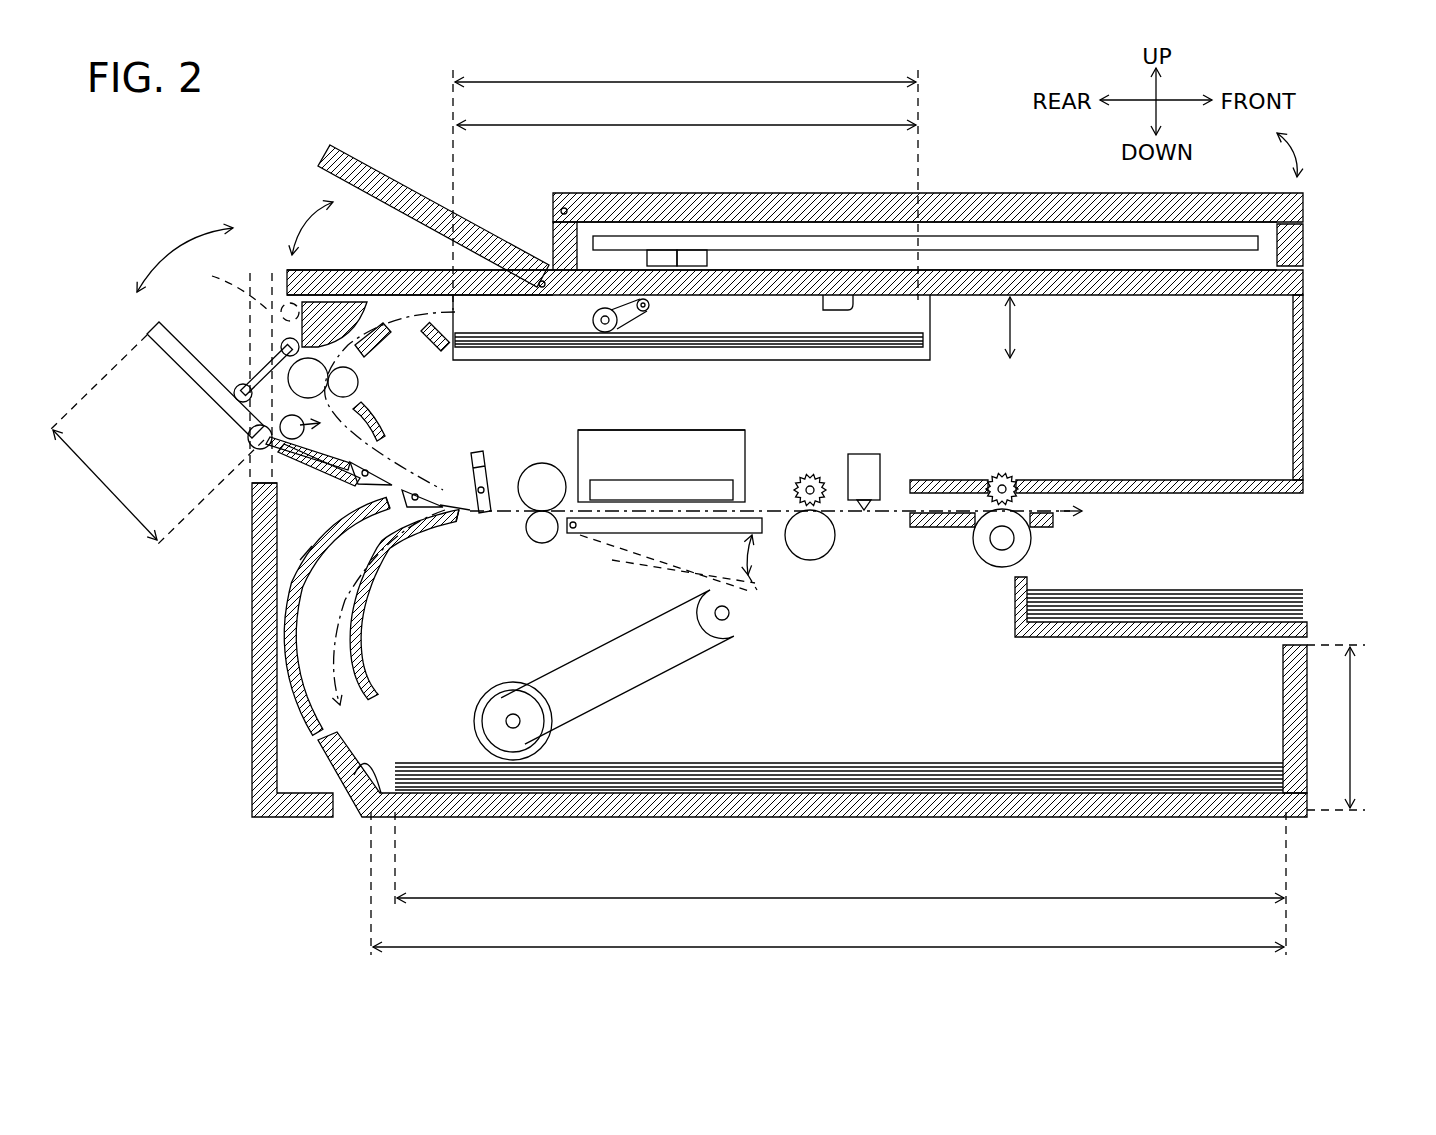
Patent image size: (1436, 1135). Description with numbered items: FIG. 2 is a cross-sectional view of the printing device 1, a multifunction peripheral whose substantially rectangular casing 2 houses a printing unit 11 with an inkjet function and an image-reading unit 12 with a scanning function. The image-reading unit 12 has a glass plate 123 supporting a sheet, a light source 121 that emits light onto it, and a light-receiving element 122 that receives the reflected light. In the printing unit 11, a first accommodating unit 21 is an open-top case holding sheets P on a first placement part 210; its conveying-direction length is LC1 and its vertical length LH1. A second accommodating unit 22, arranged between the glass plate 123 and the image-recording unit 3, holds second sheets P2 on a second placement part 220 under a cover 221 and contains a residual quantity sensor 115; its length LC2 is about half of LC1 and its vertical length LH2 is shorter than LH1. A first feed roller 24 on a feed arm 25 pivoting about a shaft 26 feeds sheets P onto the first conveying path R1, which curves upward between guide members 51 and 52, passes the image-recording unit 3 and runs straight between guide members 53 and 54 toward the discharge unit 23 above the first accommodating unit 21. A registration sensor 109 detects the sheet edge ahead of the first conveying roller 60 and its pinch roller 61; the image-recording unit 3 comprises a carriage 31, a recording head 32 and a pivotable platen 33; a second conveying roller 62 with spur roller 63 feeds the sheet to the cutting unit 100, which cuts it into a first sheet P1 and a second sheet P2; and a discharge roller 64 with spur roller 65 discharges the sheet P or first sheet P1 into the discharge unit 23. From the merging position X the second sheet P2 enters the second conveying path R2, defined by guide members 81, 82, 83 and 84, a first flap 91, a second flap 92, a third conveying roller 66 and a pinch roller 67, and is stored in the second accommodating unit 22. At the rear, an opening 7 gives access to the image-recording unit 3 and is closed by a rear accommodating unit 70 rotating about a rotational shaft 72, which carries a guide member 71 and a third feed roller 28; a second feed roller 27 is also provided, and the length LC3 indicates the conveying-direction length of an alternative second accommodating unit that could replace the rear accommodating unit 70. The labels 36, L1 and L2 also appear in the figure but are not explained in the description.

The printing device 1 is at (184, 196).
The casing 2 is at (244, 797).
The image-recording unit 3 is at (594, 428).
The opening 7 is at (282, 312).
The printing unit 11 is at (1120, 392).
The image-reading unit 12 is at (804, 192).
The first accommodating unit 21 is at (1000, 818).
The second accommodating unit 22 is at (932, 343).
The discharge unit 23 is at (1095, 640).
The first feed roller 24 is at (547, 760).
The feed arm 25 is at (648, 685).
The shaft 26 is at (735, 630).
The second feed roller 27 is at (598, 312).
The third feed roller 28 is at (262, 500).
The carriage 31 is at (692, 430).
The recording head 32 is at (648, 480).
The platen 33 is at (612, 545).
The guide 36 is at (449, 530).
The guide member 51 is at (292, 708).
The guide member 52 is at (365, 617).
The guide member 53 is at (957, 479).
The guide member 54 is at (933, 528).
The first conveying roller 60 is at (542, 463).
The pinch roller 61 is at (548, 543).
The second conveying roller 62 is at (810, 560).
The spur roller 63 is at (815, 476).
The discharge roller 64 is at (1003, 568).
The spur roller 65 is at (1010, 476).
The third conveying roller 66 is at (296, 395).
The pinch roller 67 is at (358, 386).
The rear accommodating unit 70 is at (178, 357).
The guide member 71 is at (278, 290).
The rotational shaft 72 is at (256, 442).
The guide member 81 is at (268, 447).
The guide member 82 is at (388, 436).
The guide member 83 is at (378, 350).
The guide member 84 is at (331, 300).
The first flap 91 is at (404, 535).
The second flap 92 is at (317, 537).
The cutting unit 100 is at (866, 452).
The registration sensor 109 is at (487, 520).
The residual quantity sensor 115 is at (842, 296).
The light source 121 is at (650, 250).
The light-receiving element 122 is at (690, 250).
The glass plate 123 is at (1023, 237).
The first placement part 210 is at (352, 778).
The second placement part 220 is at (440, 352).
The cover 221 is at (408, 285).
The sheets P is at (940, 762).
The first sheet P1 is at (1126, 588).
The second sheet P2 is at (732, 333).
The merging position X is at (467, 498).
The first conveying path R1 is at (765, 508).
The second conveying path R2 is at (388, 303).
The length of the first accommodating unit LC1 is at (827, 883).
The length of the second accommodating unit LC2 is at (685, 68).
The length of an alternative second accommodating unit LC3 is at (157, 440).
The length L1 is at (840, 883).
The length L2 is at (686, 110).
The vertical length of the first accommodating unit LH1 is at (1353, 727).
The vertical length of the second accommodating unit LH2 is at (1035, 327).